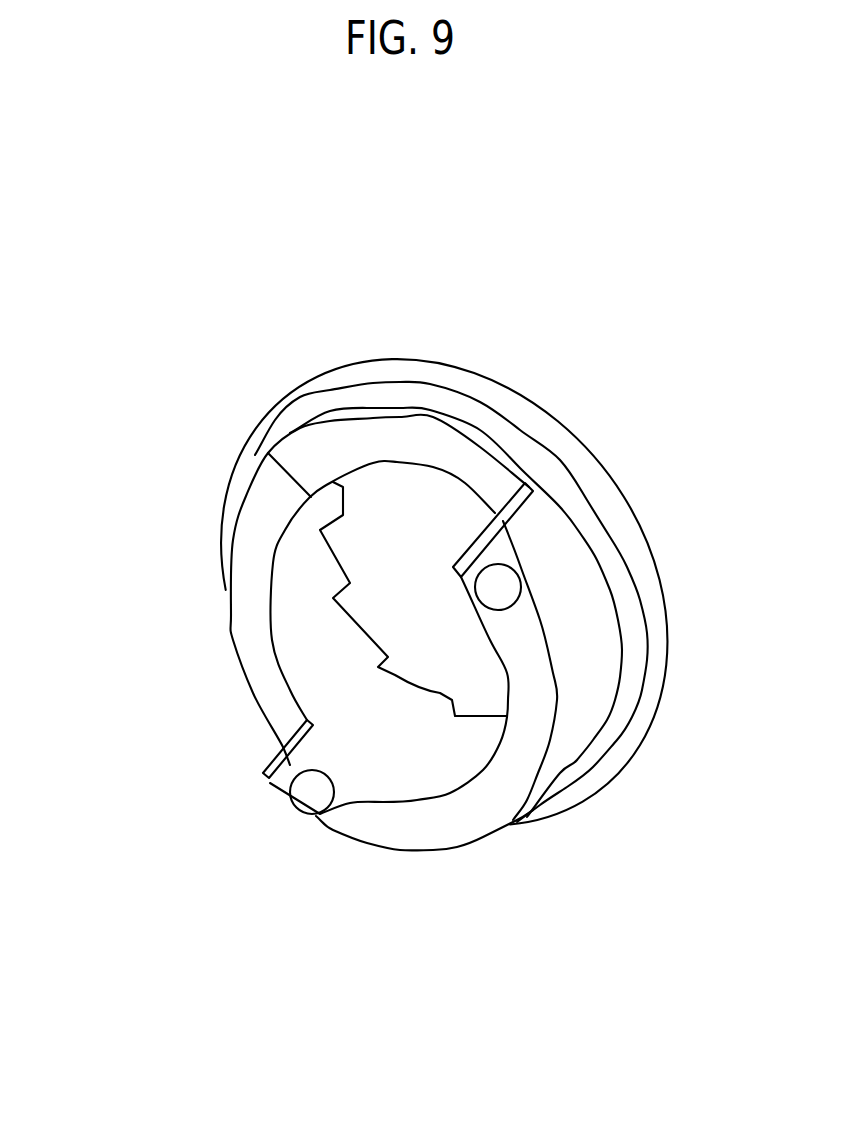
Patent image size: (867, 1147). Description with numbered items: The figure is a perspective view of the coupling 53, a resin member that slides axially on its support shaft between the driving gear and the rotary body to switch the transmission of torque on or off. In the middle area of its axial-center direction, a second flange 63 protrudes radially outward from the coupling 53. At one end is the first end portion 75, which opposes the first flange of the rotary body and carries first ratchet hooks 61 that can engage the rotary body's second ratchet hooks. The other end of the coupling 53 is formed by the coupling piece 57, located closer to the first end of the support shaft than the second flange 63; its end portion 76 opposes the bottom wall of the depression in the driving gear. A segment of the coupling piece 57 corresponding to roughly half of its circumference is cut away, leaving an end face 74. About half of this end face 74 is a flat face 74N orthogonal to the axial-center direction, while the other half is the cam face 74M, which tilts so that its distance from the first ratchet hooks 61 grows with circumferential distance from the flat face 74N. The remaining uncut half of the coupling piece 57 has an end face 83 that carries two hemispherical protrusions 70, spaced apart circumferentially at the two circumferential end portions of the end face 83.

The coupling 53 is at (152, 356).
The coupling piece 57 is at (583, 710).
The first ratchet hooks 61 is at (366, 645).
The second flange 63 is at (573, 453).
The protrusions 70 is at (500, 589).
The end face 74 is at (243, 522).
The cam face 74M is at (250, 637).
The flat face 74N is at (393, 443).
The first end portion 75 is at (323, 647).
The end portion 76 is at (587, 635).
The end face 83 is at (455, 820).